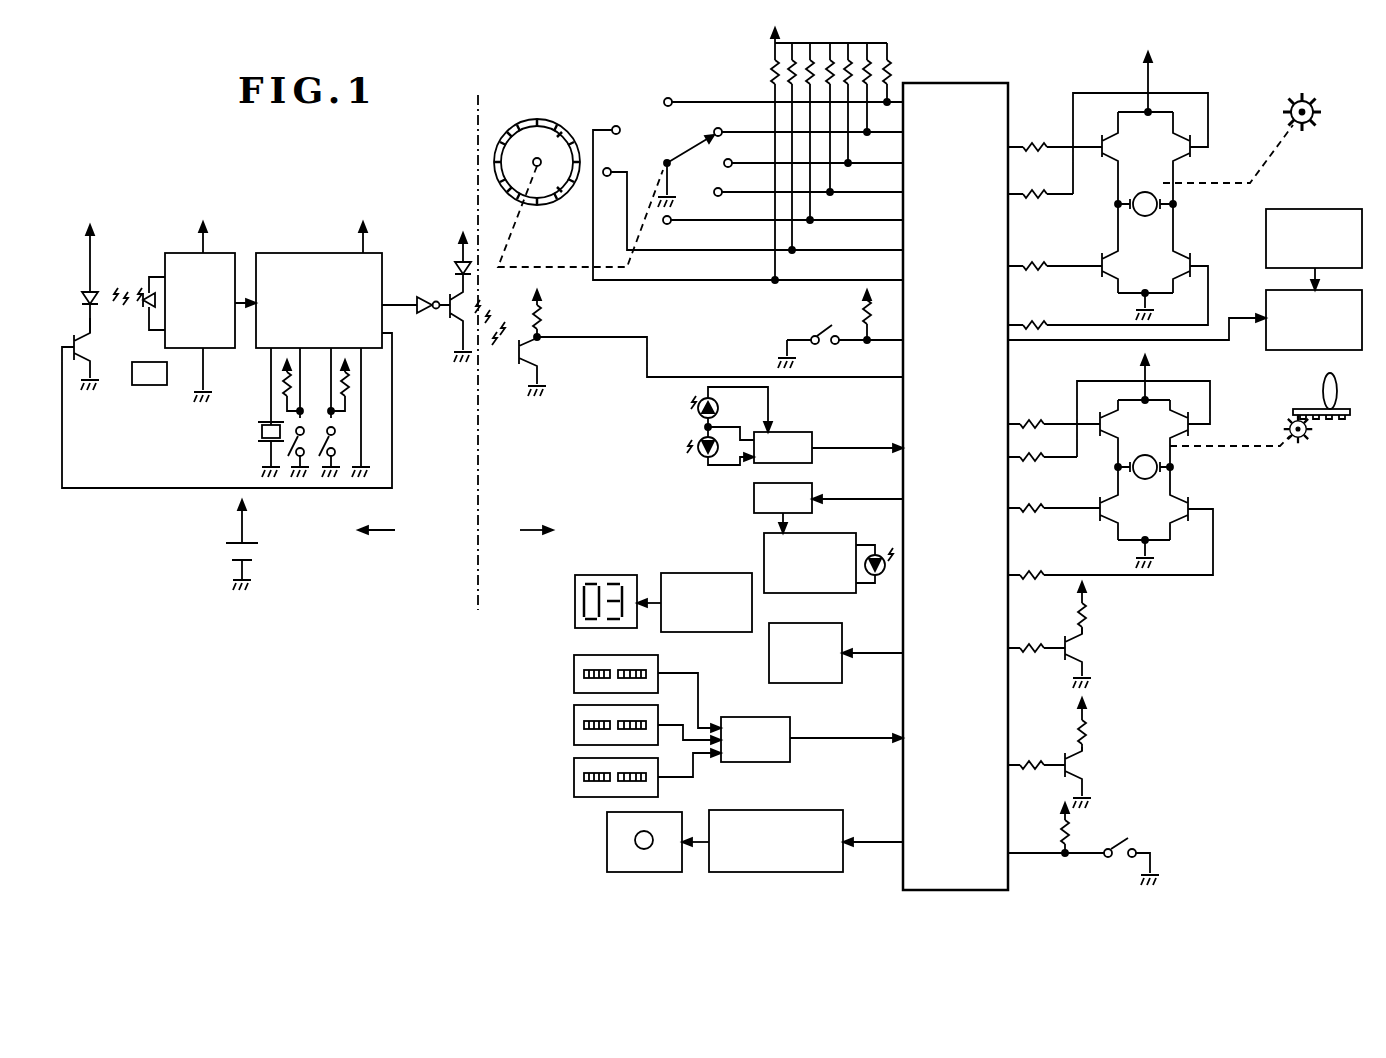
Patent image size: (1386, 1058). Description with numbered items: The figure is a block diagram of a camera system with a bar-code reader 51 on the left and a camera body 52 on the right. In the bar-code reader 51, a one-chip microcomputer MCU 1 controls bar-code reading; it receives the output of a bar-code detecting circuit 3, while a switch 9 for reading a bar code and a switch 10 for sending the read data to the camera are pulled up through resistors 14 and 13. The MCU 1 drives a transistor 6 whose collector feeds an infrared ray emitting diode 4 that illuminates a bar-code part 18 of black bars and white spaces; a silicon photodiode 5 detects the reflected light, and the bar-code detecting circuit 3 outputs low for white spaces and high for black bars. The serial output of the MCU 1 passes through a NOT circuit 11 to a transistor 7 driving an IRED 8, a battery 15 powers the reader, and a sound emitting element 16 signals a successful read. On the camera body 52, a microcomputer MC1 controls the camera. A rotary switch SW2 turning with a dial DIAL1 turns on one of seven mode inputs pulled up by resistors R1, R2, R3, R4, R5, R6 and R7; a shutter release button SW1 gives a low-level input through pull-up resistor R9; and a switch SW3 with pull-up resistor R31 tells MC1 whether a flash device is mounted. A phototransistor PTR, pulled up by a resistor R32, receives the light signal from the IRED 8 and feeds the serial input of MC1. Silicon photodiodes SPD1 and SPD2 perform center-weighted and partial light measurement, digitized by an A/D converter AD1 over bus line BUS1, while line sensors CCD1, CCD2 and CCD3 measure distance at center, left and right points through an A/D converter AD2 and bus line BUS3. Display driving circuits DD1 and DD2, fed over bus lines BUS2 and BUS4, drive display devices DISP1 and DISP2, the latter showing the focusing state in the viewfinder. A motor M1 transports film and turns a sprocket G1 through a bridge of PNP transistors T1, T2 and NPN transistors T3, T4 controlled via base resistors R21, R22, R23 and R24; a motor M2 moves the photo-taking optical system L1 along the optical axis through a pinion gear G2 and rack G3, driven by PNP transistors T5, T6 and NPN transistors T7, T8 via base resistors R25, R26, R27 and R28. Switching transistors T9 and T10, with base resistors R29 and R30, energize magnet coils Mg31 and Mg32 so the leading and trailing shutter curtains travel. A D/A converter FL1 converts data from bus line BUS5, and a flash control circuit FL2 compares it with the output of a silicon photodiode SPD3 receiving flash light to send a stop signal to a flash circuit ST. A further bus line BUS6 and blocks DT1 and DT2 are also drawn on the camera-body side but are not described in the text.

The one-chip microcomputer (MCU) 1 is at (276, 253).
The bar-code detecting circuit 3 is at (174, 253).
The infrared ray emitting diode (IRED) 4 is at (81, 286).
The silicon photodiode (SPD) 5 is at (131, 288).
The transistor 6 is at (92, 360).
The transistor 7 is at (452, 328).
The infrared ray emitting diode (IRED) 8 is at (457, 262).
The switch 9 is at (308, 434).
The switch 10 is at (342, 440).
The NOT circuit 11 is at (422, 290).
The resistor 13 is at (352, 394).
The resistor 14 is at (278, 394).
The power source battery 15 is at (230, 558).
The sound emitting element 16 is at (257, 436).
The bar-code part 18 is at (150, 385).
The bar-code reader 51 is at (392, 540).
The camera body 52 is at (536, 540).
The dial DIAL1 is at (535, 120).
The shutter release button SW1 is at (812, 330).
The rotary switch SW2 is at (645, 136).
The switch SW3 is at (1130, 842).
The pull-up resistor R1 is at (893, 70).
The pull-up resistor R2 is at (884, 44).
The pull-up resistor R3 is at (860, 44).
The pull-up resistor R4 is at (838, 44).
The pull-up resistor R5 is at (814, 44).
The pull-up resistor R6 is at (793, 44).
The pull-up resistor R7 is at (768, 72).
The pull-up resistor R9 is at (858, 304).
The base resistor R21 is at (1036, 144).
The base resistor R22 is at (1036, 190).
The base resistor R23 is at (1036, 262).
The base resistor R24 is at (1036, 322).
The base resistor R25 is at (1036, 421).
The base resistor R26 is at (1036, 460).
The base resistor R27 is at (1036, 511).
The base resistor R28 is at (1036, 580).
The base resistor R29 is at (1036, 653).
The base resistor R30 is at (1036, 756).
The pull-up resistor R31 is at (1058, 830).
The resistor R32 is at (545, 318).
The phototransistor PTR is at (696, 359).
The microcomputer MC1 is at (991, 82).
The PNP transistor T1 is at (1102, 134).
The PNP transistor T2 is at (1178, 146).
The NPN transistor T3 is at (1102, 252).
The NPN transistor T4 is at (1187, 252).
The PNP transistor T5 is at (1108, 420).
The PNP transistor T6 is at (1174, 421).
The NPN transistor T7 is at (1108, 528).
The NPN transistor T8 is at (1178, 528).
The NPN switching transistor T9 is at (1082, 650).
The NPN switching transistor T10 is at (1082, 770).
The motor M1 is at (1145, 216).
The motor M2 is at (1145, 479).
The sprocket G1 is at (1312, 92).
The pinion gear G2 is at (1298, 442).
The rack G3 is at (1336, 420).
The photo-taking optical system L1 is at (1318, 390).
The imprinting circuit DT1 is at (1264, 343).
The detection circuit DT2 is at (1341, 208).
The bus line BUS1 is at (862, 444).
The bus line BUS2 is at (872, 605).
The bus line BUS3 is at (870, 735).
The bus line BUS4 is at (875, 840).
The bus line BUS5 is at (864, 497).
The bus BUS6 is at (1072, 343).
The silicon photodiode SPD1 is at (692, 460).
The silicon photodiode SPD2 is at (692, 404).
The silicon photodiode SPD3 is at (882, 544).
The A/D converter AD1 is at (798, 430).
The A/D converter AD2 is at (742, 716).
The D/A converter FL1 is at (752, 505).
The flash control circuit FL2 is at (762, 543).
The flash circuit ST is at (769, 652).
The display driving circuit DD1 is at (672, 570).
The display driving circuit DD2 is at (742, 808).
The display device DISP1 is at (570, 609).
The display device DISP2 is at (607, 859).
The line sensor CCD1 is at (571, 674).
The line sensor CCD2 is at (571, 726).
The line sensor CCD3 is at (571, 778).
The magnet coil Mg31 is at (1090, 605).
The magnet coil Mg32 is at (1090, 722).